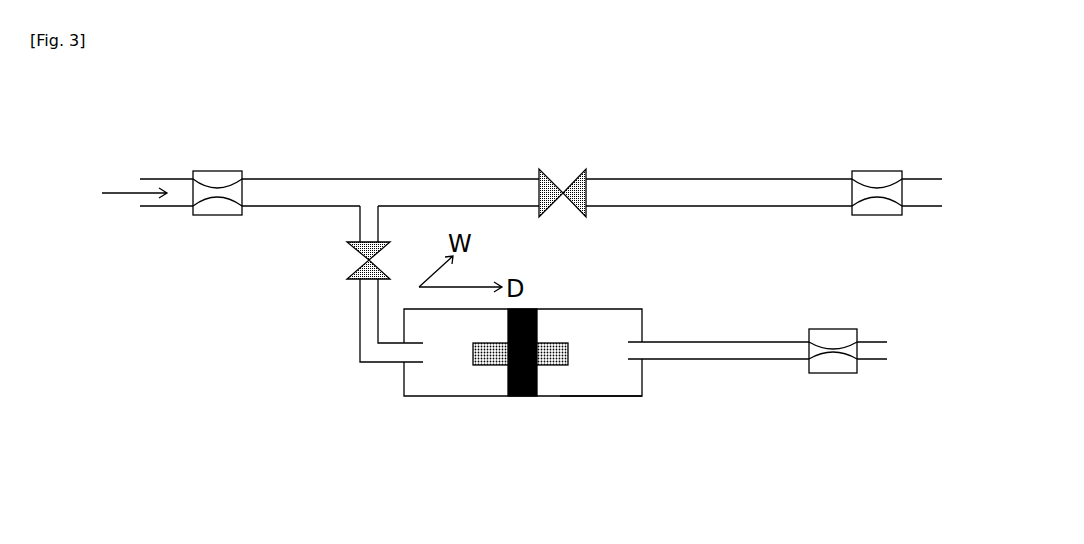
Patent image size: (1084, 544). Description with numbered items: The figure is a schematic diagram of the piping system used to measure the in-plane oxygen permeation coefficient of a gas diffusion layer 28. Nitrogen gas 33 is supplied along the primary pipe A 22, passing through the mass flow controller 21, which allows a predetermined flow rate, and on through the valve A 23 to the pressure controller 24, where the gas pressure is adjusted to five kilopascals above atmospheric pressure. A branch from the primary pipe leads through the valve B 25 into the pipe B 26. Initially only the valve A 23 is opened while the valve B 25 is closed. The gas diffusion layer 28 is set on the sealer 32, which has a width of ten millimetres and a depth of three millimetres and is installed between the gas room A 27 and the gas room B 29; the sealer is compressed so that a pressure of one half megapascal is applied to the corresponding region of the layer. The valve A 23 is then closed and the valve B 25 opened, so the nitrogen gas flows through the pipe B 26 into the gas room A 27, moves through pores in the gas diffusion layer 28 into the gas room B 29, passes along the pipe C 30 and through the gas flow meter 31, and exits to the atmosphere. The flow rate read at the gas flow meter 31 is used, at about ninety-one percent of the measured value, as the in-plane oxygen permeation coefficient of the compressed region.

The mass flow controller 21 is at (213, 170).
The primary pipe A 22 is at (407, 178).
The valve A 23 is at (582, 168).
The pressure controller 24 is at (878, 170).
The valve B 25 is at (350, 278).
The pipe B 26 is at (358, 363).
The gas room A 27 is at (472, 387).
The gas diffusion layer 28 is at (488, 366).
The gas room B 29 is at (582, 387).
The pipe C 30 is at (680, 363).
The gas flow meter 31 is at (833, 328).
The sealer 32 is at (538, 322).
The nitrogen gas 33 is at (127, 190).